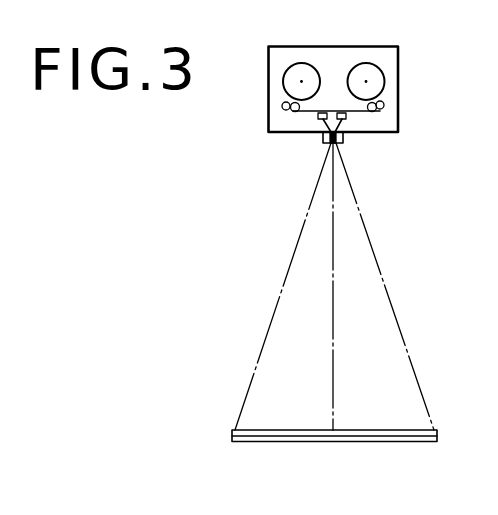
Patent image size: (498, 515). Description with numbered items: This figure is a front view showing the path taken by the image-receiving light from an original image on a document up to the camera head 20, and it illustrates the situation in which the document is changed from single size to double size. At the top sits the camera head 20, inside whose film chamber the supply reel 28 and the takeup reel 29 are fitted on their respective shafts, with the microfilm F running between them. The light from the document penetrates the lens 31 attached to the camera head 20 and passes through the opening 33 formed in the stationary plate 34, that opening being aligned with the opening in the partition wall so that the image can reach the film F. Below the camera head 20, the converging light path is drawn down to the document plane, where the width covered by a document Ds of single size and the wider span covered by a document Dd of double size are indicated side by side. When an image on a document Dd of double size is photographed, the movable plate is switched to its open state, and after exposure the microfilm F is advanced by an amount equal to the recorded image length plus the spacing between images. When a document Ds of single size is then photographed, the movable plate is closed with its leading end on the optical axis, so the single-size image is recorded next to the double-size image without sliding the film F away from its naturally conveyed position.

The camera head 20 is at (385, 46).
The supply reel 28 is at (300, 75).
The takeup reel 29 is at (367, 75).
The opening 33 is at (334, 111).
The stationary plate 34 is at (346, 118).
The lens 31 is at (343, 139).
The microfilm F is at (309, 115).
The document of single size Ds is at (330, 424).
The document of double size Dd is at (437, 448).